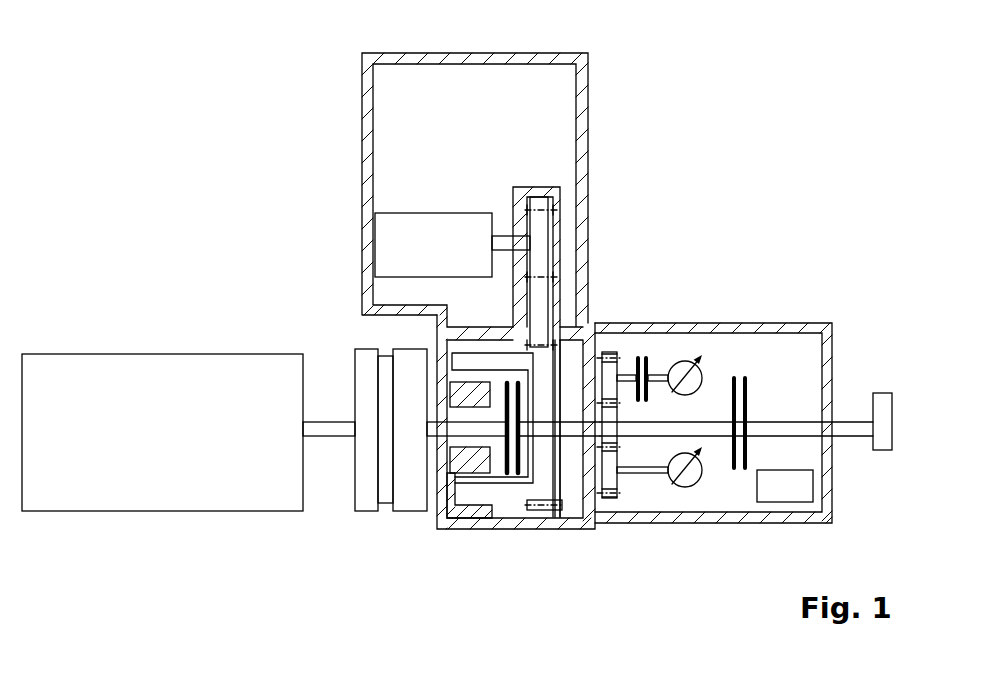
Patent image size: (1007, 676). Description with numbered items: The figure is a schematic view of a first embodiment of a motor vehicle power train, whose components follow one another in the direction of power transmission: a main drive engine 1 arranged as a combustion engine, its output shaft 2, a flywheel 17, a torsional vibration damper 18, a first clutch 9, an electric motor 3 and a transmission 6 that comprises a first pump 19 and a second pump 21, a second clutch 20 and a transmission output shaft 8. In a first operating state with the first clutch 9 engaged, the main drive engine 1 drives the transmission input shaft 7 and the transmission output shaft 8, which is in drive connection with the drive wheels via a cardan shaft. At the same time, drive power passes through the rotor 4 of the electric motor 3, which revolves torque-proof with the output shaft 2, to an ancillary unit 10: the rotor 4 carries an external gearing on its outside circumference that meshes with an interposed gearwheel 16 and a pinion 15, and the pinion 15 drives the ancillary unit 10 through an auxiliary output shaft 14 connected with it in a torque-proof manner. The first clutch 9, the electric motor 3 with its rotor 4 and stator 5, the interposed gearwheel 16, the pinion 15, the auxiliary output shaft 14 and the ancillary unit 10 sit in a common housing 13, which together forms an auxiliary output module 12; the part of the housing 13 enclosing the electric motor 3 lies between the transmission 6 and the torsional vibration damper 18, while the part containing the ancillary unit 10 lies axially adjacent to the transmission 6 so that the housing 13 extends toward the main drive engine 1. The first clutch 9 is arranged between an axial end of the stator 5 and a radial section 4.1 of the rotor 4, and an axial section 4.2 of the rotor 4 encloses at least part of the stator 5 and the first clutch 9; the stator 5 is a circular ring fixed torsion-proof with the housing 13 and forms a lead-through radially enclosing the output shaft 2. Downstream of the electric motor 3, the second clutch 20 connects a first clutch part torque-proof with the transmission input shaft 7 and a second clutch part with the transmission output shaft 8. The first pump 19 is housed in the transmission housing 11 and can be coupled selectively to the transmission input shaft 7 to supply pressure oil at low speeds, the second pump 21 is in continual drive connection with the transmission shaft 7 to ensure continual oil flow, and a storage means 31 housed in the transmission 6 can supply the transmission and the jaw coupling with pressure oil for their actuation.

The main drive engine 1 is at (156, 361).
The output shaft 2 is at (328, 421).
The electric motor 3 is at (552, 556).
The rotor 4 is at (470, 470).
The radial section of the rotor 4.1 is at (548, 467).
The axial section of the rotor 4.2 is at (502, 490).
The stator 5 is at (455, 500).
The transmission 6 is at (742, 274).
The transmission input shaft 7 is at (568, 420).
The transmission output shaft 8 is at (855, 420).
The first clutch 9 is at (516, 478).
The ancillary unit 10 is at (423, 213).
The transmission housing 11 is at (794, 323).
The auxiliary output module 12 is at (648, 90).
The housing 13 is at (362, 105).
The auxiliary output shaft 14 is at (507, 240).
The pinion 15 is at (545, 216).
The interposed gearwheel 16 is at (543, 291).
The flywheel 17 is at (368, 500).
The torsional vibration damper 18 is at (410, 500).
The first pump 19 is at (686, 356).
The second clutch 20 is at (745, 470).
The second pump 21 is at (690, 500).
The storage means 31 is at (810, 485).